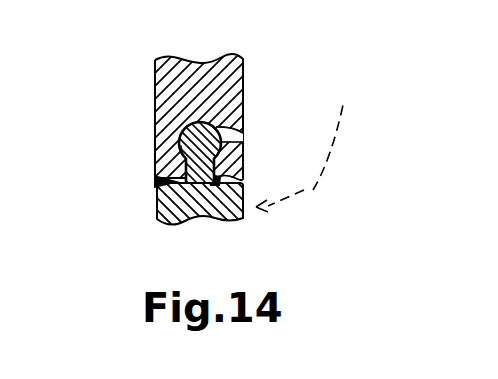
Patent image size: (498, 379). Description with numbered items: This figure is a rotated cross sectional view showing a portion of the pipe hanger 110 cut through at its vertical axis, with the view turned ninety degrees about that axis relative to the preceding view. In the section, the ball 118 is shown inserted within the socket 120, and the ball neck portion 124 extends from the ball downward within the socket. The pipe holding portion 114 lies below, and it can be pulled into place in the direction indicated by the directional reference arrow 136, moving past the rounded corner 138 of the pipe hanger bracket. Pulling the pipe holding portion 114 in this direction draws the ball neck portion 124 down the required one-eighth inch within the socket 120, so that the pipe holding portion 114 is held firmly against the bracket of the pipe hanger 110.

The pipe hanger 110 is at (199, 128).
The pipe holding portion 114 is at (162, 196).
The ball 118 is at (240, 139).
The socket 120 is at (190, 125).
The ball neck portion 124 is at (175, 158).
The directional reference arrow 136 is at (318, 186).
The rounded corner 138 is at (240, 170).